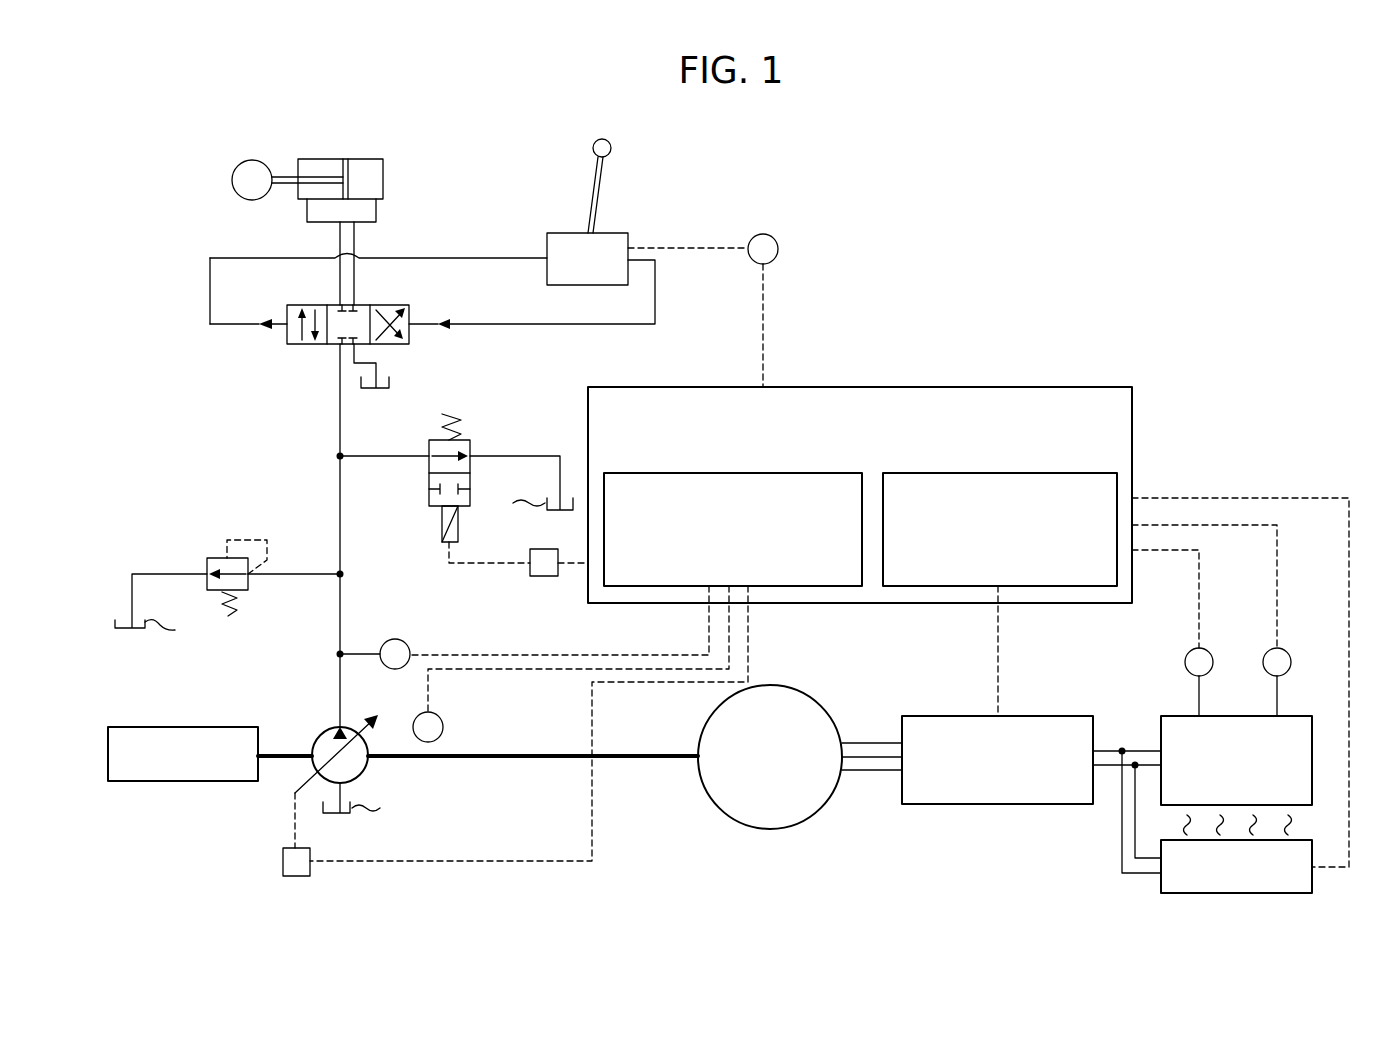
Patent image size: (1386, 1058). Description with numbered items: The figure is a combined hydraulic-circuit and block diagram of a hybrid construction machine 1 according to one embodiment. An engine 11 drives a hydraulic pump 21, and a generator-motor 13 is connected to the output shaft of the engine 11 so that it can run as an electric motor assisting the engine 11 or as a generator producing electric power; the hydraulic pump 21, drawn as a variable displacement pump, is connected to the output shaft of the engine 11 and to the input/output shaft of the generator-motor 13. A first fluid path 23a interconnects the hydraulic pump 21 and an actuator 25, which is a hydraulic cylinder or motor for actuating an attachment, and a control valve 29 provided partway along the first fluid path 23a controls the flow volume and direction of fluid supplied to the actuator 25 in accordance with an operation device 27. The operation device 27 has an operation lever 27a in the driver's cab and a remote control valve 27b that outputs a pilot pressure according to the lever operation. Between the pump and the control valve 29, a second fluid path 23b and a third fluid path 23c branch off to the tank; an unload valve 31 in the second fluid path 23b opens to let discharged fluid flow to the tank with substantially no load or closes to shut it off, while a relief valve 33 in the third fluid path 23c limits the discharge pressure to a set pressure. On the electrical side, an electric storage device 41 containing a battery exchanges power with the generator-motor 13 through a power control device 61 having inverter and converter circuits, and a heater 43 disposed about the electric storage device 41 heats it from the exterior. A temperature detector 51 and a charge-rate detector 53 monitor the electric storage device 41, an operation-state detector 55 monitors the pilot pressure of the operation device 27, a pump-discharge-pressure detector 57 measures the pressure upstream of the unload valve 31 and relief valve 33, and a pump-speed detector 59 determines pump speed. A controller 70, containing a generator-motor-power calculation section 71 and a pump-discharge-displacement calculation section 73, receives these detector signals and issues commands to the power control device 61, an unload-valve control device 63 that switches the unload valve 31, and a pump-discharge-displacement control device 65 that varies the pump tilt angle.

The hydraulic system 1 is at (1212, 143).
The engine 11 is at (192, 727).
The generator-motor 13 is at (806, 692).
The hydraulic pump 21 is at (316, 734).
The first fluid path 23a is at (338, 404).
The second fluid path 23b is at (386, 458).
The third fluid path 23c is at (148, 573).
The actuator 25 is at (355, 159).
The operation device 27 is at (611, 198).
The operation lever 27a is at (593, 185).
The remote control valve 27b is at (613, 232).
The control valve 29 is at (377, 303).
The unload valve 31 is at (467, 439).
The relief valve 33 is at (210, 557).
The electric storage device 41 is at (1290, 715).
The heater 43 is at (1160, 882).
The temperature detector 51 is at (1203, 645).
The charge-rate detector 53 is at (1281, 645).
The operation-state detector 55 is at (763, 234).
The pump-discharge-pressure detector 57 is at (395, 639).
The pump-speed detector 59 is at (445, 725).
The power control device 61 is at (1028, 715).
The unload-valve control device 63 is at (545, 585).
The pump-discharge-displacement control device 65 is at (281, 862).
The controller 70 is at (1105, 386).
The generator-motor-power calculation section 71 is at (1047, 472).
The pump-discharge-displacement calculation section 73 is at (798, 472).